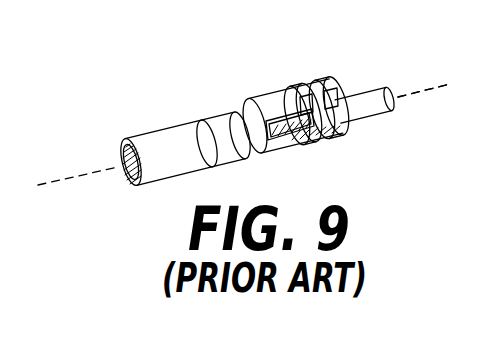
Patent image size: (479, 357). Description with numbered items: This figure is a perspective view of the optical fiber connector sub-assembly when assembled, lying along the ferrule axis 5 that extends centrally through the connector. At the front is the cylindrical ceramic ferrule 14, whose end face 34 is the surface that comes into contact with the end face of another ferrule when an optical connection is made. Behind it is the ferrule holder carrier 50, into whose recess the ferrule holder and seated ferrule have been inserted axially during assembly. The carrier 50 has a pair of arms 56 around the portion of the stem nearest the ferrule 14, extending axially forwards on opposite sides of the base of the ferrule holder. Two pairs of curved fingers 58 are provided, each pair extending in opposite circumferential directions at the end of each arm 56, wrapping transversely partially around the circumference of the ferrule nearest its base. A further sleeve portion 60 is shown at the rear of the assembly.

The ferrule axis 5 is at (85, 174).
The outer sleeve 60 is at (207, 105).
The ferrule holder carrier 50 is at (264, 99).
The arms 56 is at (300, 90).
The curved fingers 58 is at (342, 86).
The ferrule 14 is at (380, 90).
The end face 34 is at (384, 99).